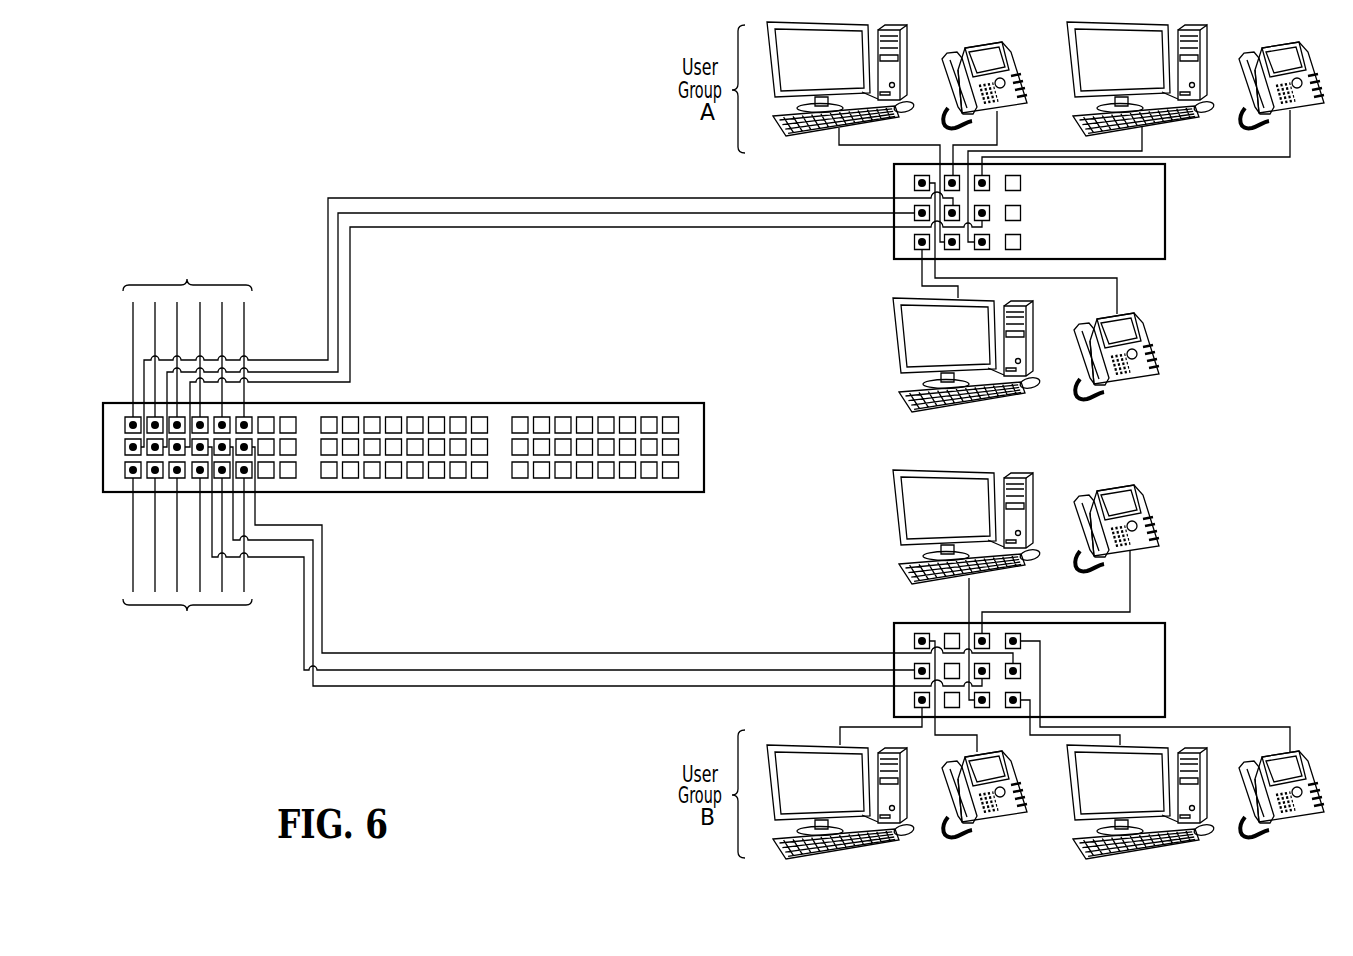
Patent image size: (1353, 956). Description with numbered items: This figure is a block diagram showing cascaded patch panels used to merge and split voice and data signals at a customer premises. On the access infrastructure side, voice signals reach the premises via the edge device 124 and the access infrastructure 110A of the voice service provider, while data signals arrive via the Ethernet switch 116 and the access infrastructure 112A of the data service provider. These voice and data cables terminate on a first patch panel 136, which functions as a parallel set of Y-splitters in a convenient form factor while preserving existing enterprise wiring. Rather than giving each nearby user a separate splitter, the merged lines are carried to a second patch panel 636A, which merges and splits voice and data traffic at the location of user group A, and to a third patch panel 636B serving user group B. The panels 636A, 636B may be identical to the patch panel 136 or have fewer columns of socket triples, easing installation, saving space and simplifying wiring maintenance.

The edge device 124 is at (188, 291).
The access infrastructure 110A is at (188, 304).
The Ethernet switch 116 is at (188, 603).
The access infrastructure 112A is at (188, 603).
The patch panel 136 is at (704, 449).
The second patch panel 636A is at (1165, 213).
The third patch panel 636B is at (1165, 672).